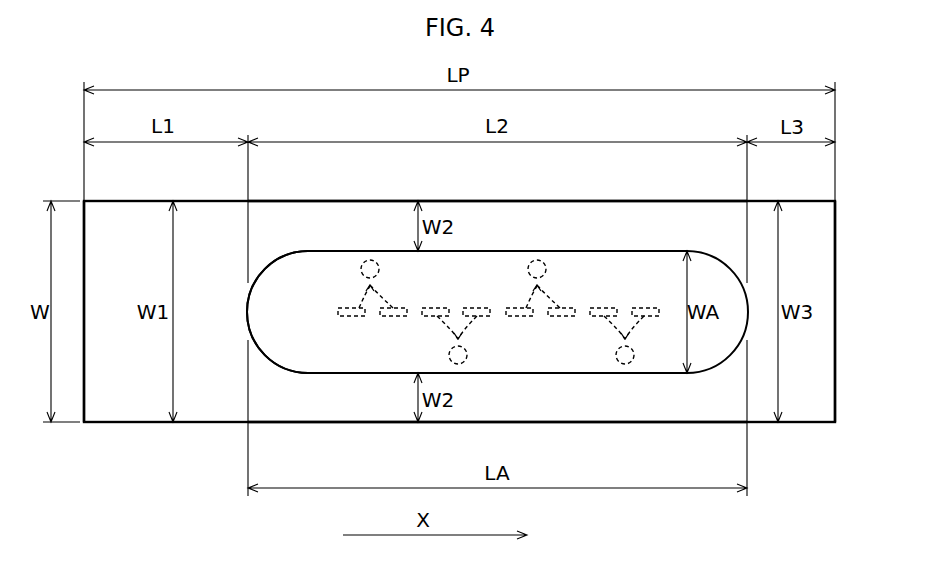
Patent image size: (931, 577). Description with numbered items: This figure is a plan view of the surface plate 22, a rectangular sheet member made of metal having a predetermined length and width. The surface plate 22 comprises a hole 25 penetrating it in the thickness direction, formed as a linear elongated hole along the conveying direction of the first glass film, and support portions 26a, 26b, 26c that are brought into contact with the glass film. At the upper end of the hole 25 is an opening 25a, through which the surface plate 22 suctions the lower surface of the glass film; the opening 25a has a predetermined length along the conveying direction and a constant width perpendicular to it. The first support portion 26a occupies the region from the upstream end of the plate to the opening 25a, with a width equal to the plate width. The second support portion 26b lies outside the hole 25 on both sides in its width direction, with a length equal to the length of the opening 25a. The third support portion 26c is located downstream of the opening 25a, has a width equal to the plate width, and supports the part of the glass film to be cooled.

The surface plate 22 is at (603, 200).
The hole 25 is at (301, 277).
The opening 25a is at (286, 368).
The first support portion 26a is at (119, 406).
The second support portion 26b is at (528, 222).
The third support portion 26c is at (811, 406).